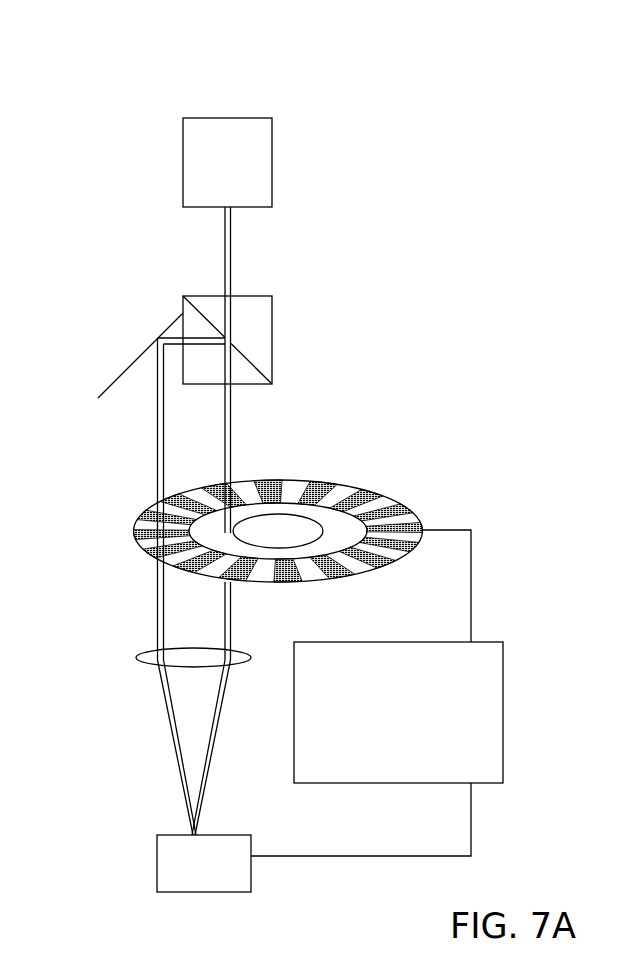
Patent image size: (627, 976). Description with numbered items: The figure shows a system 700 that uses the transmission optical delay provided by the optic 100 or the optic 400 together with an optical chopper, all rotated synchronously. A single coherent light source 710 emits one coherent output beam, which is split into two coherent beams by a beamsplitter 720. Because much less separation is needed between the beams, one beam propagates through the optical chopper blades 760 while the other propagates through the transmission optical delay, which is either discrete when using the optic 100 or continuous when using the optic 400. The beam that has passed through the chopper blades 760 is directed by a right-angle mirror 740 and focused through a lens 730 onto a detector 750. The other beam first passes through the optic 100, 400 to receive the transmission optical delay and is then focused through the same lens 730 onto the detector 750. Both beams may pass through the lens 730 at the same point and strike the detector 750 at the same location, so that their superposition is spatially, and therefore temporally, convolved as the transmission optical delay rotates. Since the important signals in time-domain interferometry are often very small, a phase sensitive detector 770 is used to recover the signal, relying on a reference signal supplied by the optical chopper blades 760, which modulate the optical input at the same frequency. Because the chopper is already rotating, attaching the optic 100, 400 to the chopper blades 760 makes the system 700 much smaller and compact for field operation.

The system 700 is at (129, 44).
The single coherent light source 710 is at (282, 159).
The beamsplitter 720 is at (278, 342).
The lens 730 is at (149, 668).
The right-angle mirror 740 is at (158, 331).
The detector 750 is at (150, 871).
The optical chopper blades 760 is at (320, 480).
The phase sensitive detector 770 is at (523, 740).
The optic 100 is at (316, 490).
The optic 400 is at (278, 490).